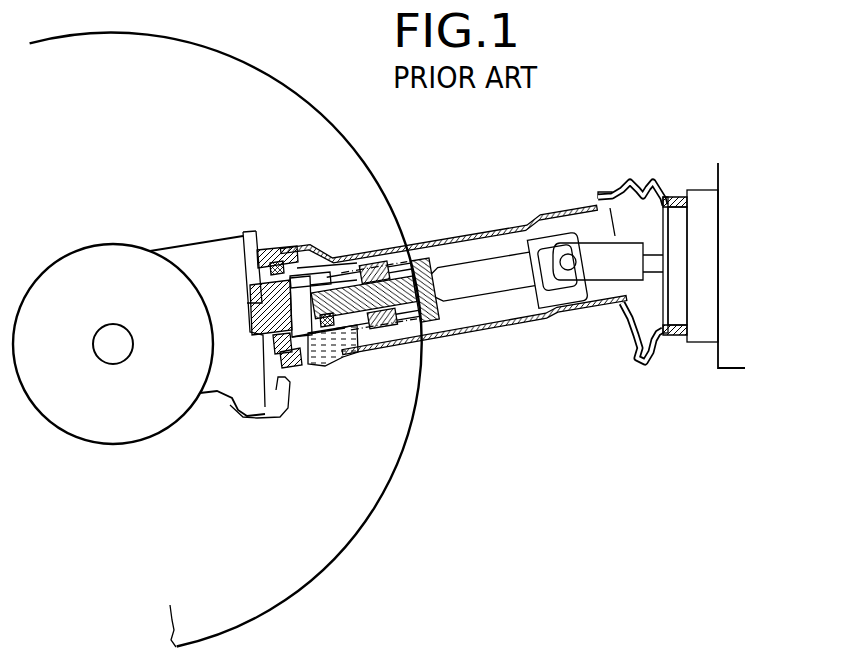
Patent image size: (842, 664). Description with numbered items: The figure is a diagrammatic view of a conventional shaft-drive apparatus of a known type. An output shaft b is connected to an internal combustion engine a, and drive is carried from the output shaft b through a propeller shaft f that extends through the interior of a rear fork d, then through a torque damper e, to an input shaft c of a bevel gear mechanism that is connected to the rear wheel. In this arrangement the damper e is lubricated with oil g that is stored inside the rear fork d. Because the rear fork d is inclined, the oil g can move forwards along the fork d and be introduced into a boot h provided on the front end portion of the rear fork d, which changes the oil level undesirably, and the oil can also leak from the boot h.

The internal combustion engine a is at (733, 366).
The output shaft b is at (652, 255).
The input shaft c is at (243, 232).
The rear fork d is at (448, 240).
The torque damper e is at (373, 262).
The propeller shaft f is at (500, 277).
The oil g is at (345, 350).
The boot h is at (624, 289).